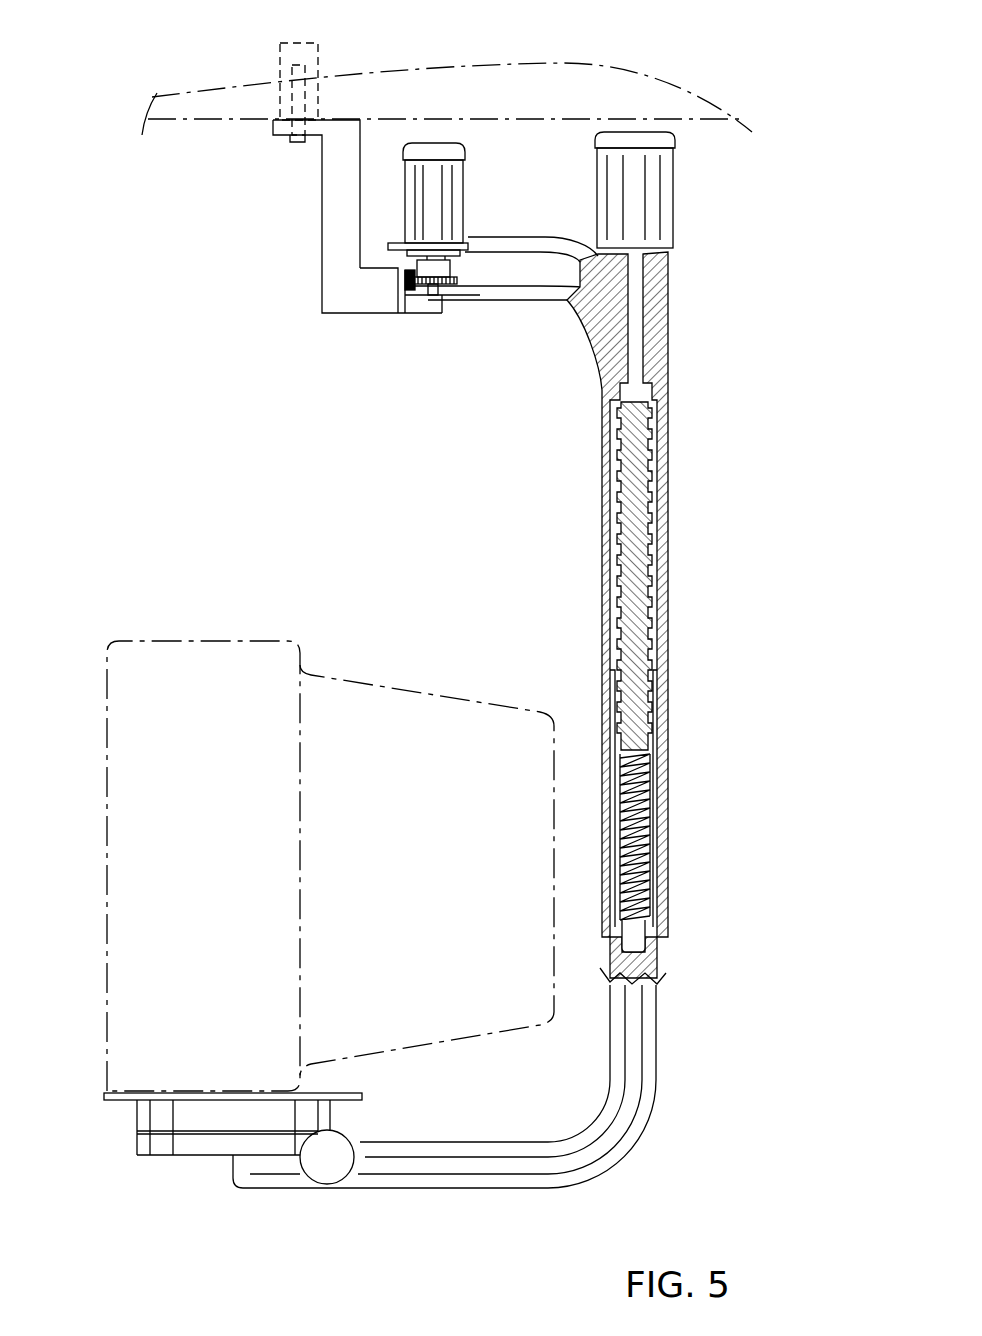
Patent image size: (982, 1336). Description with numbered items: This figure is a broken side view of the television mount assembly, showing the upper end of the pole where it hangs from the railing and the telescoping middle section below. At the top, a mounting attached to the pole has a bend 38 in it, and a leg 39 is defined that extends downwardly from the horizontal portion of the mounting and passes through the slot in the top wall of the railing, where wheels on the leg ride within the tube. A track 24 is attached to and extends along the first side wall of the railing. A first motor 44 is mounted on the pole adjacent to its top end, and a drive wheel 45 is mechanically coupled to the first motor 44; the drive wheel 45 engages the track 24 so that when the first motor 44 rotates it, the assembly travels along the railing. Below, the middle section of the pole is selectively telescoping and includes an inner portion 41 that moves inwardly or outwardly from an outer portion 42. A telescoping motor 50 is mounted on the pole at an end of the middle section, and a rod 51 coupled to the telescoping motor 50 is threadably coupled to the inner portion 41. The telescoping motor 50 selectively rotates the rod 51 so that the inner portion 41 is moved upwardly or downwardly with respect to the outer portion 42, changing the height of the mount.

The track 24 is at (410, 288).
The bend 38 is at (390, 267).
The leg 39 is at (387, 270).
The inner portion 41 is at (657, 958).
The outer portion 42 is at (668, 848).
The first motor 44 is at (470, 190).
The drive wheel 45 is at (460, 267).
The telescoping motor 50 is at (677, 205).
The rod 51 is at (632, 420).